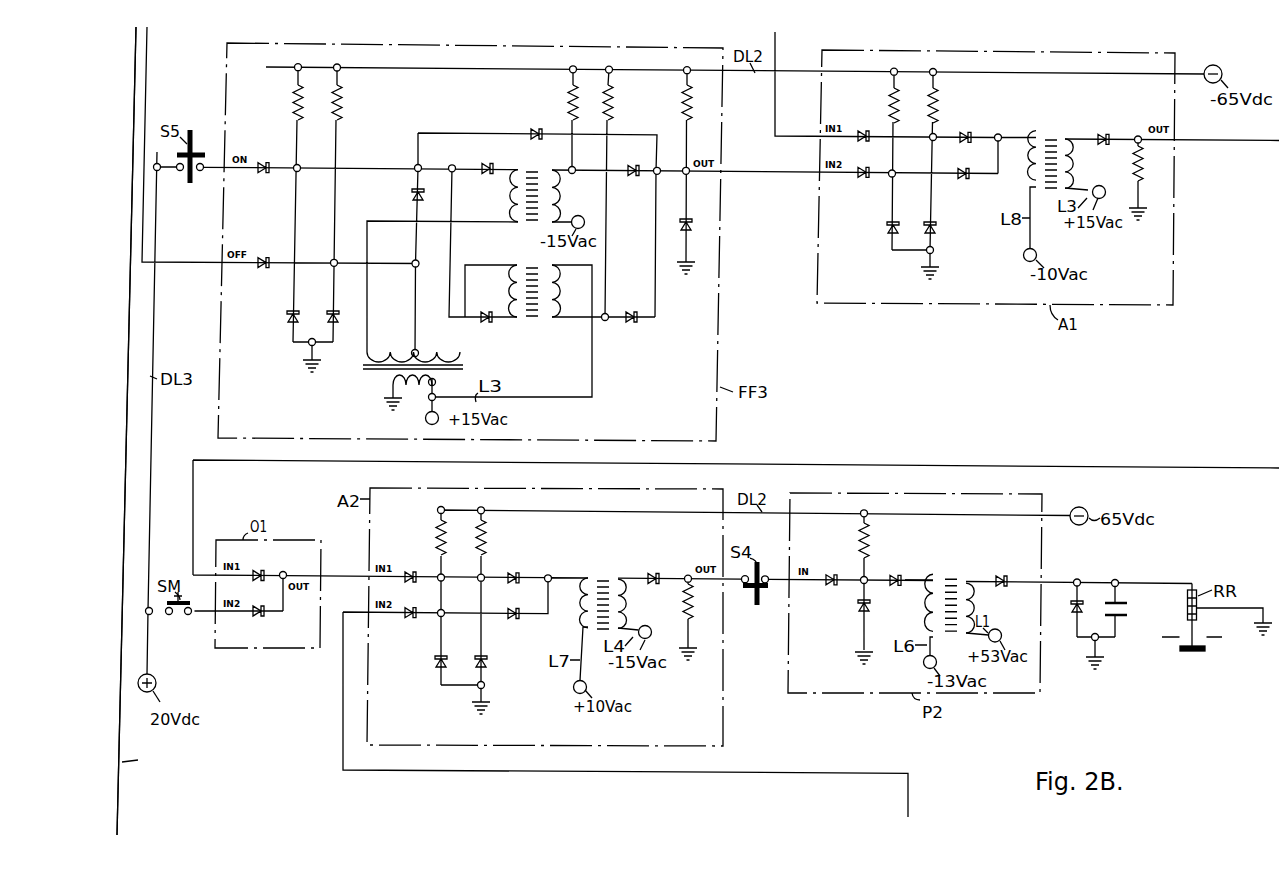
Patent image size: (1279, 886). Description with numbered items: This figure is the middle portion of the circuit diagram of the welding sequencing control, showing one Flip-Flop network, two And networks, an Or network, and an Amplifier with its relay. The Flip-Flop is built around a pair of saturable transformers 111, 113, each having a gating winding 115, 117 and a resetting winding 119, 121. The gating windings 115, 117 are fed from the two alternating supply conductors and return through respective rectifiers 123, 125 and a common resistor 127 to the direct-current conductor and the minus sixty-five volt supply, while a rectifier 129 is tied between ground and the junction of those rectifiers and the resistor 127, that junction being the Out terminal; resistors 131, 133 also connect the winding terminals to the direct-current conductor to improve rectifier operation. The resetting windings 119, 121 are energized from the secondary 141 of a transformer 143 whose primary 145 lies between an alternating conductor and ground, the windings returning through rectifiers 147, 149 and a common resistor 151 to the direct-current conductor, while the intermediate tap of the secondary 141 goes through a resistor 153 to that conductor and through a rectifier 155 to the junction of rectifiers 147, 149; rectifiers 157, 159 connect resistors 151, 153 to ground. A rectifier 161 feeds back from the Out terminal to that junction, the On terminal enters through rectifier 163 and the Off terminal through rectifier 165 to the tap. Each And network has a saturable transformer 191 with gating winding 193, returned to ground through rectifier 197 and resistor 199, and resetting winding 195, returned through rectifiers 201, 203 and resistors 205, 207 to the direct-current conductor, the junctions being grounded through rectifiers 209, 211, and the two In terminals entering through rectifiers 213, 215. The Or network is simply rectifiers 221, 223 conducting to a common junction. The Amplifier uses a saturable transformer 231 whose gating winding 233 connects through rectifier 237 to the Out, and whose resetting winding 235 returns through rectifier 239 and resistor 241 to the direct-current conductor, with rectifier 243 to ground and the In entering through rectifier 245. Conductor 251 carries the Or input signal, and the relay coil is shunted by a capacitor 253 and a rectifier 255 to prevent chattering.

The saturable transformer 111 is at (541, 161).
The saturable transformer 113 is at (557, 340).
The gating winding 115 is at (554, 200).
The gating winding 117 is at (558, 289).
The resetting winding 119 is at (517, 200).
The resetting winding 121 is at (512, 290).
The rectifier 123 is at (636, 177).
The rectifier 125 is at (633, 310).
The common resistor 127 is at (680, 106).
The rectifier 129 is at (689, 222).
The resistor 131 is at (566, 90).
The resistor 133 is at (612, 90).
The secondary 141 is at (400, 352).
The transformer 143 is at (374, 391).
The primary 145 is at (434, 381).
The rectifier 147 is at (486, 161).
The rectifier 149 is at (485, 323).
The common resistor 151 is at (291, 97).
The resistor 153 is at (346, 97).
The rectifier 155 is at (410, 194).
The rectifier 157 is at (287, 316).
The rectifier 159 is at (328, 311).
The rectifier 161 is at (535, 128).
The rectifier 163 is at (268, 174).
The rectifier 165 is at (266, 256).
The saturable transformer 191 is at (1062, 130).
The gating winding 193 is at (1073, 157).
The resetting winding 195 is at (1026, 177).
The rectifier 197 is at (1105, 133).
The resistor 199 is at (1132, 176).
The rectifier 201 is at (963, 131).
The rectifier 203 is at (963, 180).
The resistor 205 is at (940, 98).
The resistor 207 is at (888, 97).
The rectifier 209 is at (936, 229).
The rectifier 211 is at (886, 229).
The rectifier 213 is at (865, 130).
The rectifier 215 is at (866, 180).
The rectifier 221 is at (262, 570).
The rectifier 223 is at (262, 618).
The saturable transformer 231 is at (960, 575).
The gating winding 233 is at (972, 600).
The resetting winding 235 is at (928, 604).
The rectifier 237 is at (1000, 573).
The rectifier 239 is at (897, 570).
The resistor 241 is at (858, 535).
The rectifier 243 is at (856, 608).
The rectifier 245 is at (833, 570).
The conductor 251 is at (122, 762).
The capacitor 253 is at (1122, 610).
The rectifier 255 is at (1074, 618).